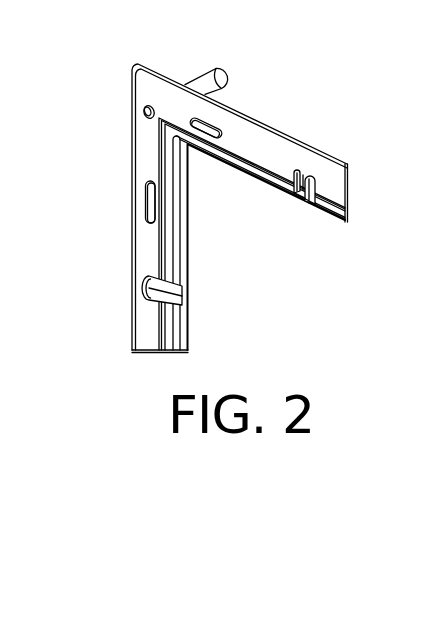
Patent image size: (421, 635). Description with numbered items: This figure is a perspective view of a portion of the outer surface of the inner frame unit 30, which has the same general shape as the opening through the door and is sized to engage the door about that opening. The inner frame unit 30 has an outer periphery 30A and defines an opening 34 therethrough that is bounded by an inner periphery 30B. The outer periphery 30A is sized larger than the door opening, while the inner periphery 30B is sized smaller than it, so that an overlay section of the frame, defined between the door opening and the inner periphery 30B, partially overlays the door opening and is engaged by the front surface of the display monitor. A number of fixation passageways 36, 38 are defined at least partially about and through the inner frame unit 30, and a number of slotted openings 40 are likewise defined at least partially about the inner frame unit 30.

The inner frame unit 30 is at (132, 92).
The outer periphery 30A is at (281, 148).
The inner periphery 30B is at (231, 167).
The opening 34 is at (253, 270).
The fixation passageway 36 is at (200, 84).
The fixation passageway 38 is at (143, 113).
The slotted opening 40 is at (219, 122).